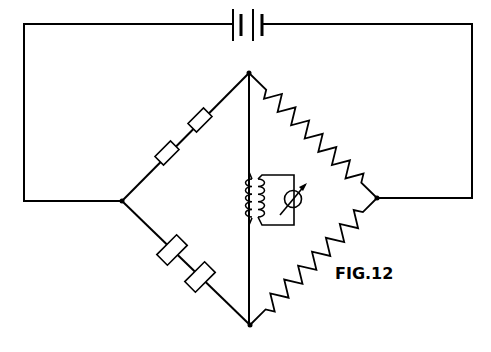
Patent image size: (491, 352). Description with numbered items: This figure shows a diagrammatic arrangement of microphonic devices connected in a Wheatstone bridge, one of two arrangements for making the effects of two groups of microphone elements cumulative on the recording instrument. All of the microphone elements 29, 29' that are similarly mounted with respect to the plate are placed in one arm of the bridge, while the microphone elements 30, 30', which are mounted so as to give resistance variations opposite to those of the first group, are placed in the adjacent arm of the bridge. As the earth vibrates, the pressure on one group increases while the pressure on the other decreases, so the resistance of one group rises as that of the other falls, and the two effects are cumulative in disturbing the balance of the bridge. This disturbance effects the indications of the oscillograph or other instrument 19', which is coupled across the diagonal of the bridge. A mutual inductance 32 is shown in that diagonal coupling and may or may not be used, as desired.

The microphone element 29 is at (167, 145).
The microphone element 29' is at (200, 115).
The microphone element 30 is at (159, 250).
The microphone element 30' is at (186, 278).
The mutual inductance 32 is at (269, 209).
The oscillograph 19' is at (305, 199).